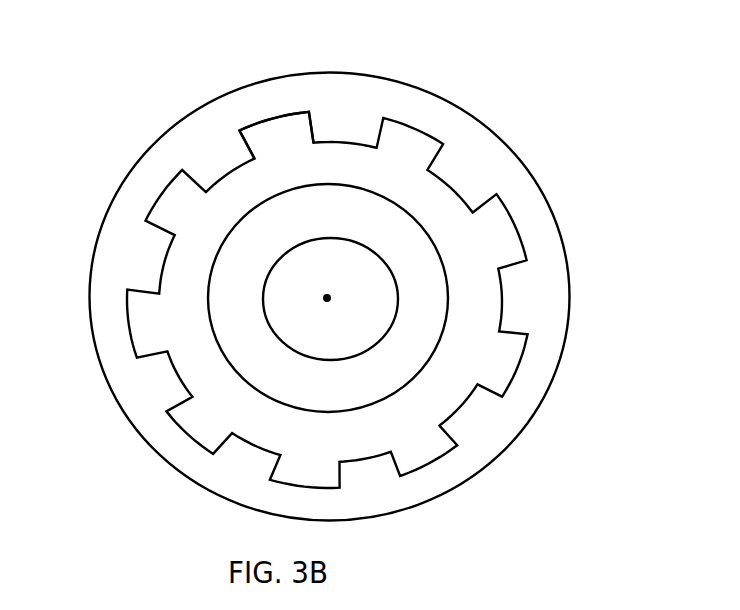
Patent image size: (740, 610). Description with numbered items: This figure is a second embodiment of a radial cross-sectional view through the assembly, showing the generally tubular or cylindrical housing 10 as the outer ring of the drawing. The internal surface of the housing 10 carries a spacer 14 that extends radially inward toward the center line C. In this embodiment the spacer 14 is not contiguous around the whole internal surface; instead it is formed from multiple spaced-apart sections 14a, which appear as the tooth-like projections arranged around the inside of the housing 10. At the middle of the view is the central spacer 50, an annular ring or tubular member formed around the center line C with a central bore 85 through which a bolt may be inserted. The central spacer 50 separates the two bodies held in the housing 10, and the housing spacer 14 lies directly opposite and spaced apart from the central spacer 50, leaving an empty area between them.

The housing 10 is at (533, 208).
The spacer 14 is at (513, 280).
The spaced-apart sections 14a is at (353, 117).
The central spacer 50 is at (418, 341).
The central bore 85 is at (368, 352).
The center line C is at (327, 298).